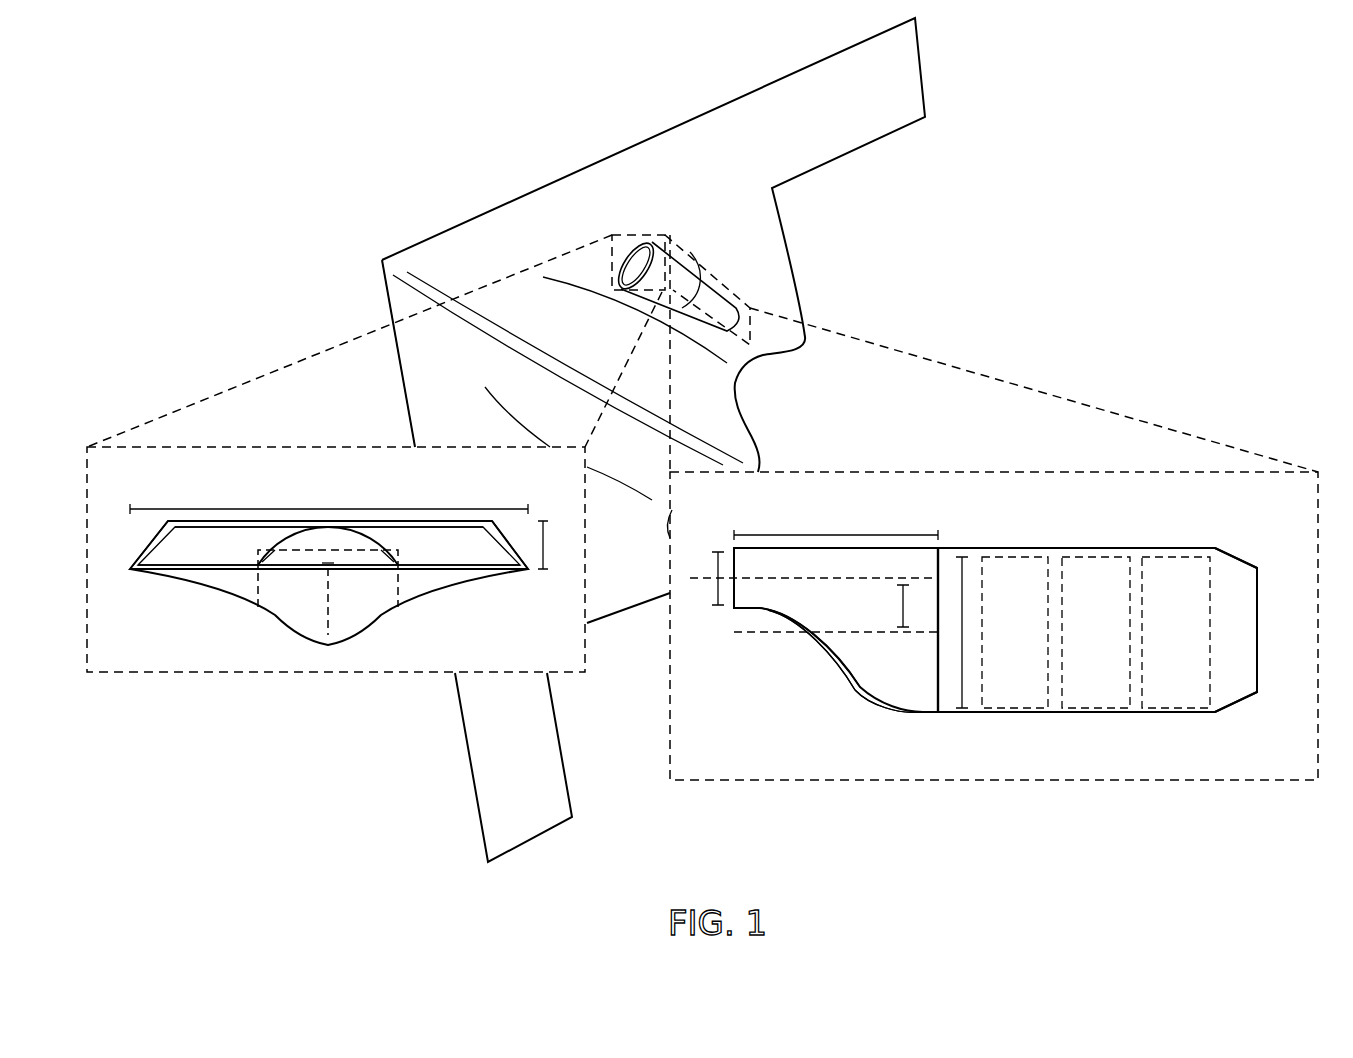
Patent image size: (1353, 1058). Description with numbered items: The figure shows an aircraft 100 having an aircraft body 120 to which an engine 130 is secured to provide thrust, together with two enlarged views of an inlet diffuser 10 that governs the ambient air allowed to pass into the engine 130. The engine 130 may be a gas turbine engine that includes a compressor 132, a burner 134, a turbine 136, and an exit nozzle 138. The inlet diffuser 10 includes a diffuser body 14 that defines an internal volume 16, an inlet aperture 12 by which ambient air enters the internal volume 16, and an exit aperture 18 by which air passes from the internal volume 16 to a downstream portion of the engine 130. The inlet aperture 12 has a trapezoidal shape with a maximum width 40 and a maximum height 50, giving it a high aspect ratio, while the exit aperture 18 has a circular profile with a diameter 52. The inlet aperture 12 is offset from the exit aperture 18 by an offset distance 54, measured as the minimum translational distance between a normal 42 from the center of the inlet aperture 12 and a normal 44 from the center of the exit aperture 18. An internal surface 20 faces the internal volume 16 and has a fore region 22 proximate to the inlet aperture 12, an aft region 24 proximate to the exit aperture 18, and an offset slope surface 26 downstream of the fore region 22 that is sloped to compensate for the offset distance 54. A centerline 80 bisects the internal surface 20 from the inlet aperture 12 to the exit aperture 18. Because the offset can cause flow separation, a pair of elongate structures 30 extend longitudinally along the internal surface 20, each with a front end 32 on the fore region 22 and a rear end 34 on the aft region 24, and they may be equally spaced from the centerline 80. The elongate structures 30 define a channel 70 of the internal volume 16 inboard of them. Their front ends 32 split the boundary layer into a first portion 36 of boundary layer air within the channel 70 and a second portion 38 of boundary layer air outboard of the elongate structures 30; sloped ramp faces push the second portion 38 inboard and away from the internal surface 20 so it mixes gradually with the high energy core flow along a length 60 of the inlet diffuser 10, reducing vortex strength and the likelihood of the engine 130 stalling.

The aircraft 100 is at (583, 440).
The aircraft body 120 is at (440, 245).
The inlet diffuser 10 is at (655, 235).
The engine 130 is at (690, 252).
The compressor 132 is at (1018, 695).
The burner 134 is at (1103, 695).
The turbine 136 is at (1178, 695).
The exit nozzle 138 is at (1232, 575).
The inlet aperture 12 is at (222, 533).
The diffuser body 14 is at (233, 580).
The internal volume 16 is at (457, 540).
The exit aperture 18 is at (937, 652).
The internal surface 20 is at (242, 565).
The fore region 22 is at (745, 608).
The aft region 24 is at (933, 707).
The offset slope surface 26 is at (840, 673).
The elongate structures 30 is at (272, 573).
The front end 32 is at (797, 617).
The rear end 34 is at (873, 690).
The first portion of boundary layer air 36 is at (310, 557).
The second portion of boundary layer air 38 is at (192, 540).
The maximum width 40 is at (347, 508).
The normal 42 is at (800, 578).
The normal 44 is at (843, 630).
The maximum height 50 is at (547, 532).
The diameter 52 is at (963, 567).
The offset distance 54 is at (907, 617).
The length 60 is at (840, 535).
The channel 70 is at (337, 555).
The centerline 80 is at (332, 613).